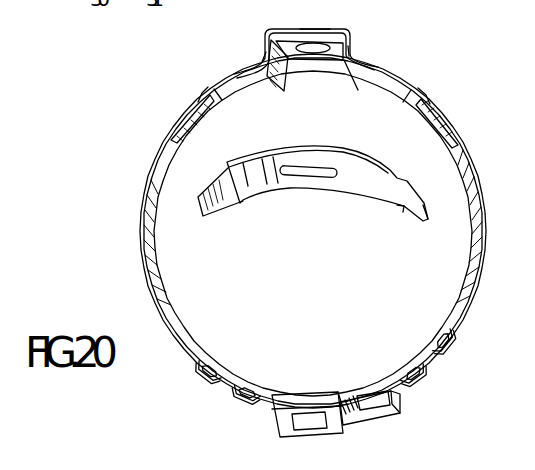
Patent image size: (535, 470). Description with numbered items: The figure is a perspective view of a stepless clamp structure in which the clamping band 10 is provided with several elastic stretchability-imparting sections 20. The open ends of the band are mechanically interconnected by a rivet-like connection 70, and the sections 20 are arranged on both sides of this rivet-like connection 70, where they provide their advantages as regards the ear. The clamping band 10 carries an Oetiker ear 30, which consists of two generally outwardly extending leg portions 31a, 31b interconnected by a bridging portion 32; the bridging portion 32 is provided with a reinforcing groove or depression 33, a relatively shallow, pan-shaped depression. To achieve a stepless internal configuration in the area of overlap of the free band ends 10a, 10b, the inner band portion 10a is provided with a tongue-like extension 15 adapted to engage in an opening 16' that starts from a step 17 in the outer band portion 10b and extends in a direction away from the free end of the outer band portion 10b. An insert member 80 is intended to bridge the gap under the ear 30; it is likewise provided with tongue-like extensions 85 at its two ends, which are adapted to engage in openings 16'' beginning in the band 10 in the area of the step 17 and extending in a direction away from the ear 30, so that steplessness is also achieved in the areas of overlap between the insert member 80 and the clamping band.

The clamping band 10 is at (478, 187).
The inner band portion 10a is at (327, 393).
The outer band portion 10b is at (279, 396).
The tongue-like extension 15 is at (371, 407).
The opening 16' is at (417, 416).
The openings 16'' is at (314, 121).
The step 17 is at (203, 94).
The elastic stretchability-imparting sections 20 is at (231, 413).
The Oetiker ear 30 is at (353, 36).
The leg portion 31a is at (263, 55).
The leg portion 31b is at (358, 57).
The bridging portion 32 is at (344, 29).
The reinforcing groove 33 is at (320, 52).
The rivet-like connection 70 is at (308, 417).
The insert member 80 is at (347, 184).
The tongue-like extensions 85 is at (221, 209).